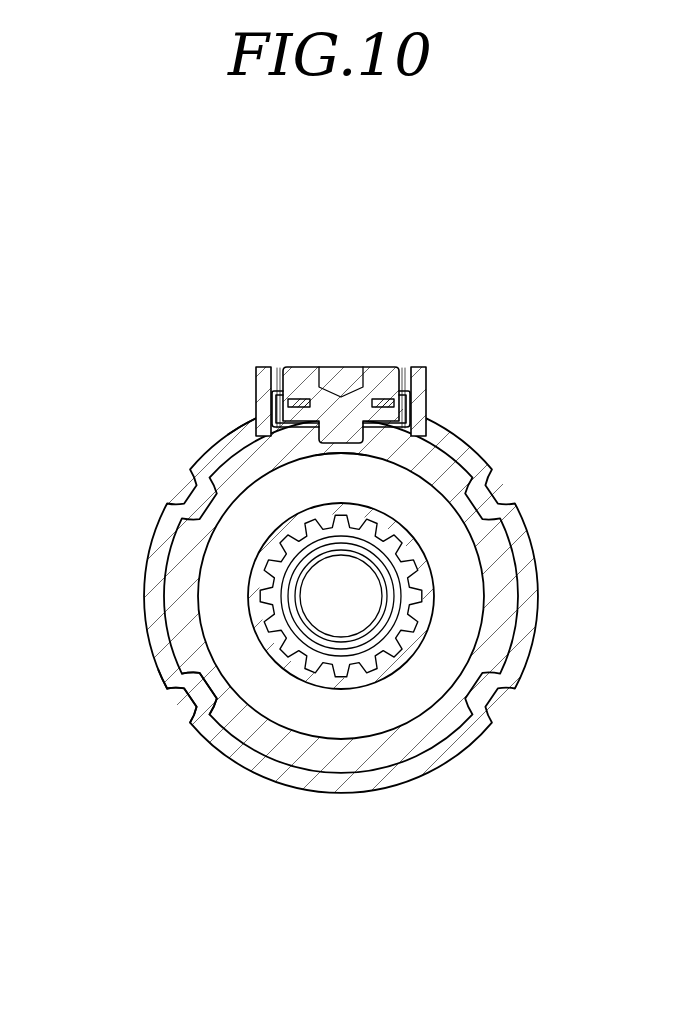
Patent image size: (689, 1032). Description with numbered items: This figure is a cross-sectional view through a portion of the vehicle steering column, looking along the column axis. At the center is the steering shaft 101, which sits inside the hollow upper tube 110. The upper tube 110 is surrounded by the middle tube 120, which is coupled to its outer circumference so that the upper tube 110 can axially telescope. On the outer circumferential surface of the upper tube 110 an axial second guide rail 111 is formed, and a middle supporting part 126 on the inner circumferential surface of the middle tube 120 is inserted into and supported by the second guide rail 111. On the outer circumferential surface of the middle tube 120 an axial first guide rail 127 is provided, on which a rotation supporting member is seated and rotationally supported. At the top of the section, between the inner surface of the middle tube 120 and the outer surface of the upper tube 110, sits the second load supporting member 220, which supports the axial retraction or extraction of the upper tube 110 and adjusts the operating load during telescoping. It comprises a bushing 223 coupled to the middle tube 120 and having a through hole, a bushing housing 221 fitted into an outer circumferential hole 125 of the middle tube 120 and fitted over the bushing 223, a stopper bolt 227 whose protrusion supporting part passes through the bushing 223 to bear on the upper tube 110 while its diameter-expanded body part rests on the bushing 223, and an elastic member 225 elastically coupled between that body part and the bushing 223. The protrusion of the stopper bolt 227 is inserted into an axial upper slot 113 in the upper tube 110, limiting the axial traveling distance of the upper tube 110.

The steering shaft 101 is at (357, 678).
The upper tube 110 is at (175, 602).
The second guide rail 111 is at (203, 683).
The upper slot 113 is at (338, 450).
The middle tube 120 is at (307, 778).
The outer circumferential hole 125 is at (258, 428).
The middle supporting part 126 is at (188, 698).
The first guide rail 127 is at (183, 701).
The second load supporting member 220 is at (337, 343).
The bushing housing 221 is at (420, 389).
The bushing 223 is at (413, 418).
The elastic member 225 is at (355, 373).
The stopper bolt 227 is at (386, 374).